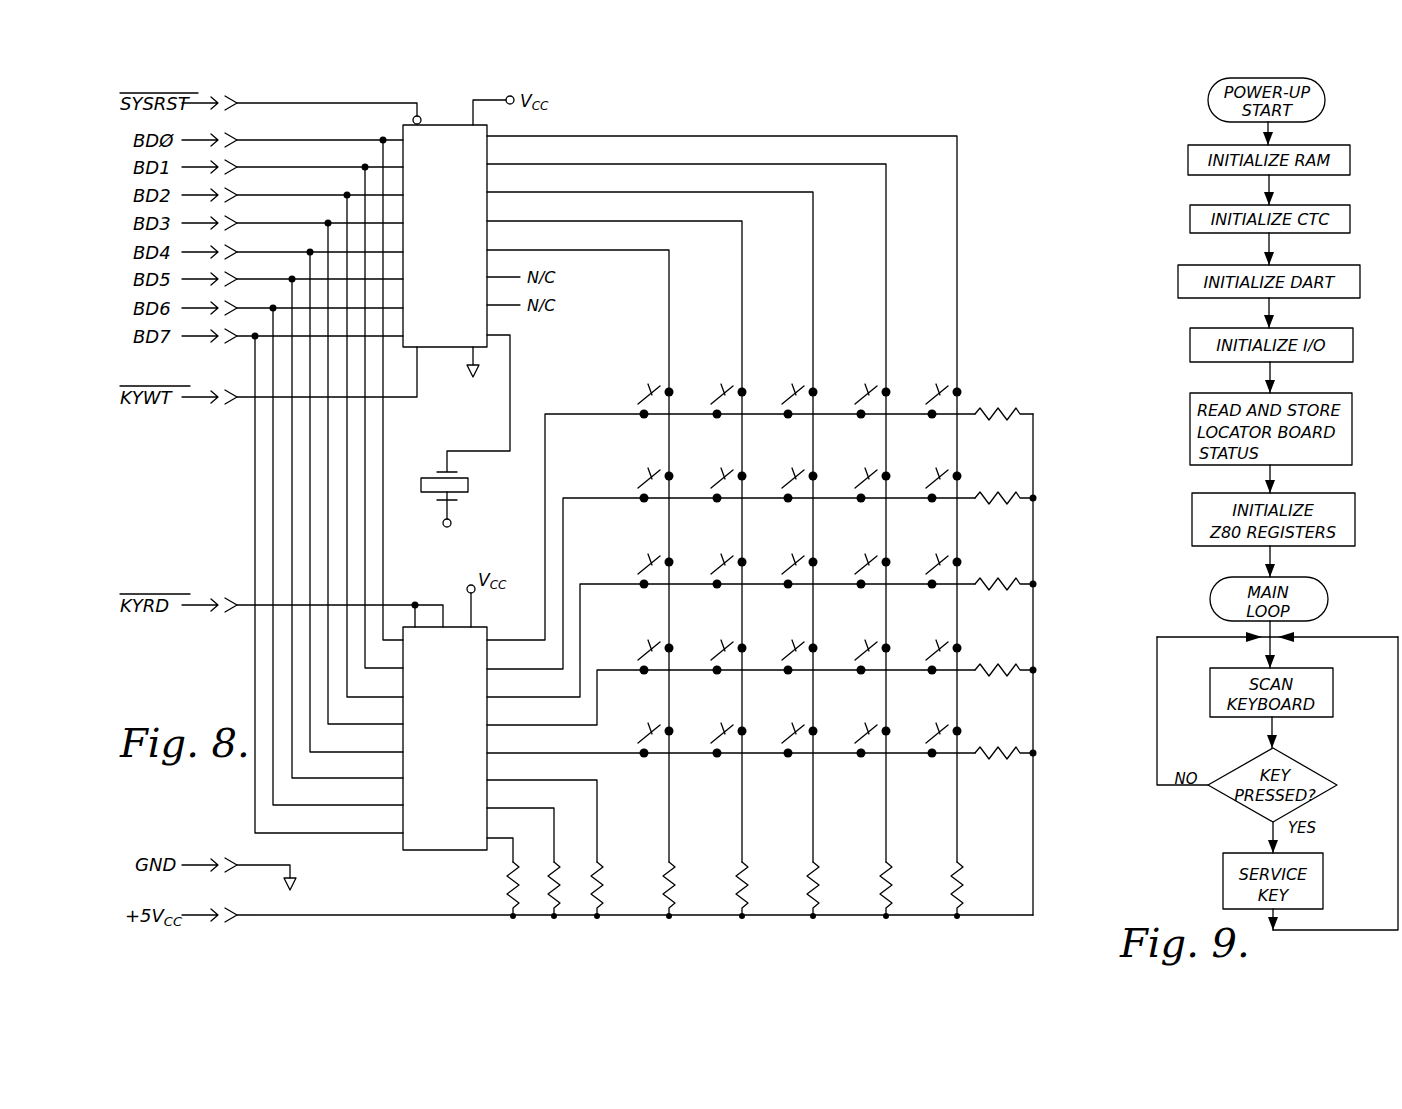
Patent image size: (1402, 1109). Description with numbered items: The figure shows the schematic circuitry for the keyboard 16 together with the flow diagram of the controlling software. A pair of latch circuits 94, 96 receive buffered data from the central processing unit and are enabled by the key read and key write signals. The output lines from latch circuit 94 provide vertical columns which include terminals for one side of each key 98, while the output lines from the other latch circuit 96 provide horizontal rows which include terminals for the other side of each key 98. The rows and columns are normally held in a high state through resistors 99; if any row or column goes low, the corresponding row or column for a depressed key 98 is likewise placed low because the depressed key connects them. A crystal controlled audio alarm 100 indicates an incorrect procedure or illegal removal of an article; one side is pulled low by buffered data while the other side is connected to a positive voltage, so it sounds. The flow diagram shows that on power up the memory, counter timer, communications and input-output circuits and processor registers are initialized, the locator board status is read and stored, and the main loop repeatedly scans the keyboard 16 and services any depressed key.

The keyboard 16 is at (978, 383).
The latch circuit 94 is at (457, 349).
The latch circuit 96 is at (453, 850).
The key 98 is at (658, 384).
The resistors 99 is at (1016, 588).
The crystal controlled audio alarm 100 is at (420, 483).